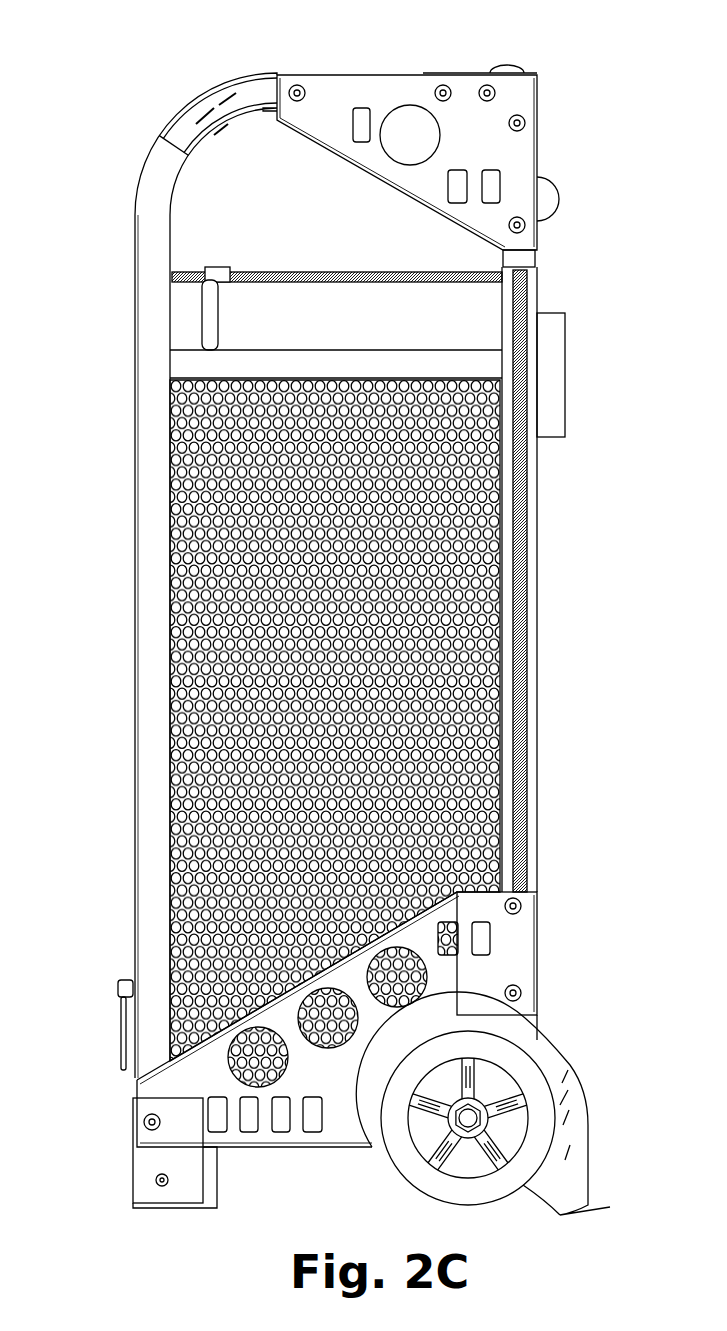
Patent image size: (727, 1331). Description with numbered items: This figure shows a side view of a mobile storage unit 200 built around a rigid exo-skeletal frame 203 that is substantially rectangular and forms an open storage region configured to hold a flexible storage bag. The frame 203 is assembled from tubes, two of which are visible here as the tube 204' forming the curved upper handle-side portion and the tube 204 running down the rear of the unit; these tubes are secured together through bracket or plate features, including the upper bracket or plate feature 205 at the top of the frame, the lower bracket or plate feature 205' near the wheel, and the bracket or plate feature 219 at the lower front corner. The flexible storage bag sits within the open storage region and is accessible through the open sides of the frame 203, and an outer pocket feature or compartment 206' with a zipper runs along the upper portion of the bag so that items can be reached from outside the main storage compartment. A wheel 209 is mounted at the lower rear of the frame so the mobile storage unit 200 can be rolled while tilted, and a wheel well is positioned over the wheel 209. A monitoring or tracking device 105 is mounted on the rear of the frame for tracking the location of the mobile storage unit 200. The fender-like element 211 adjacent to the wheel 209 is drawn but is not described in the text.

The mobile storage unit 200 is at (133, 72).
The rigid exo-skeletal frame 203 is at (155, 133).
The tube 204' is at (220, 87).
The bracket or plate feature 205 is at (446, 157).
The tube 204 is at (554, 257).
The monitoring or tracking device 105 is at (565, 360).
The outer pocket feature or compartment 206' is at (337, 286).
The wheel 209 is at (440, 583).
The bracket or plate feature 205' is at (539, 953).
The bracket or plate feature 219 is at (150, 1158).
The wheel fender 211 is at (566, 1212).